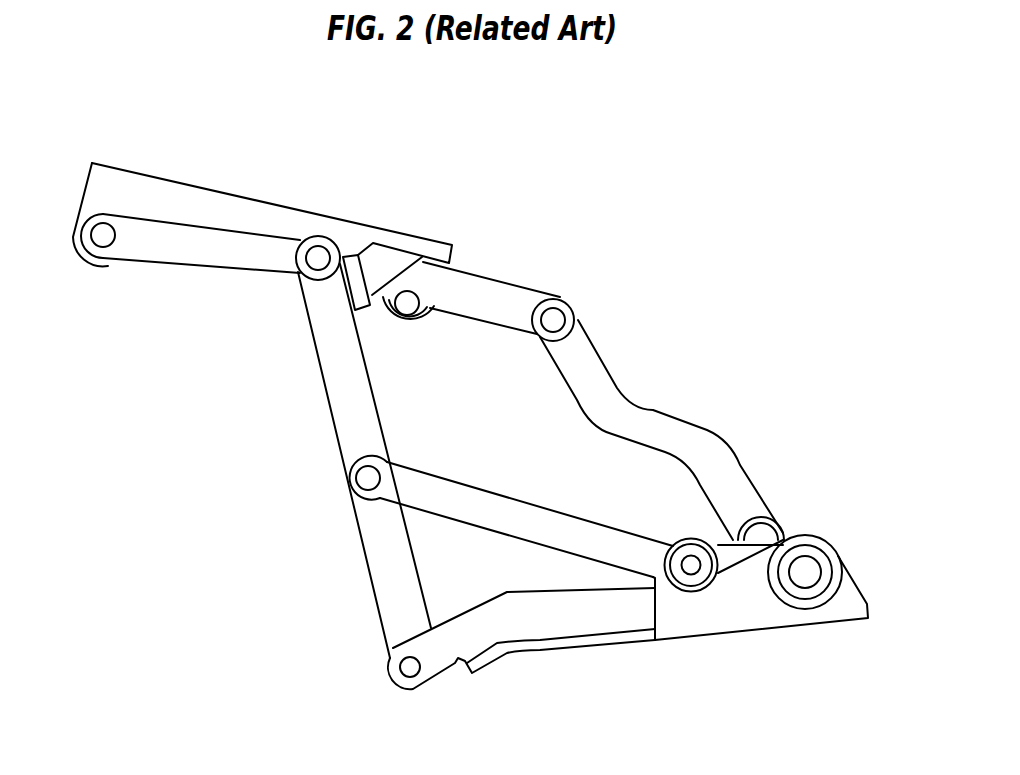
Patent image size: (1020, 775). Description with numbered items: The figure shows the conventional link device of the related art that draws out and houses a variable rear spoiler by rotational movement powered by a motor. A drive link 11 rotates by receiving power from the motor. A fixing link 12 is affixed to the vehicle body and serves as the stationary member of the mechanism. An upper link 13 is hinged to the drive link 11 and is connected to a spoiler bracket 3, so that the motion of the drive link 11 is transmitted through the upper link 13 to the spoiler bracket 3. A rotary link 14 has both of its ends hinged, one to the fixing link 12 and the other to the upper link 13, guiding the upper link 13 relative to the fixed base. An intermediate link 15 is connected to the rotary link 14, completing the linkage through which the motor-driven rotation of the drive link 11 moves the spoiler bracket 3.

The spoiler bracket 3 is at (173, 202).
The drive link 11 is at (655, 428).
The fixing link 12 is at (532, 615).
The upper link 13 is at (465, 293).
The rotary link 14 is at (343, 393).
The intermediate link 15 is at (480, 505).